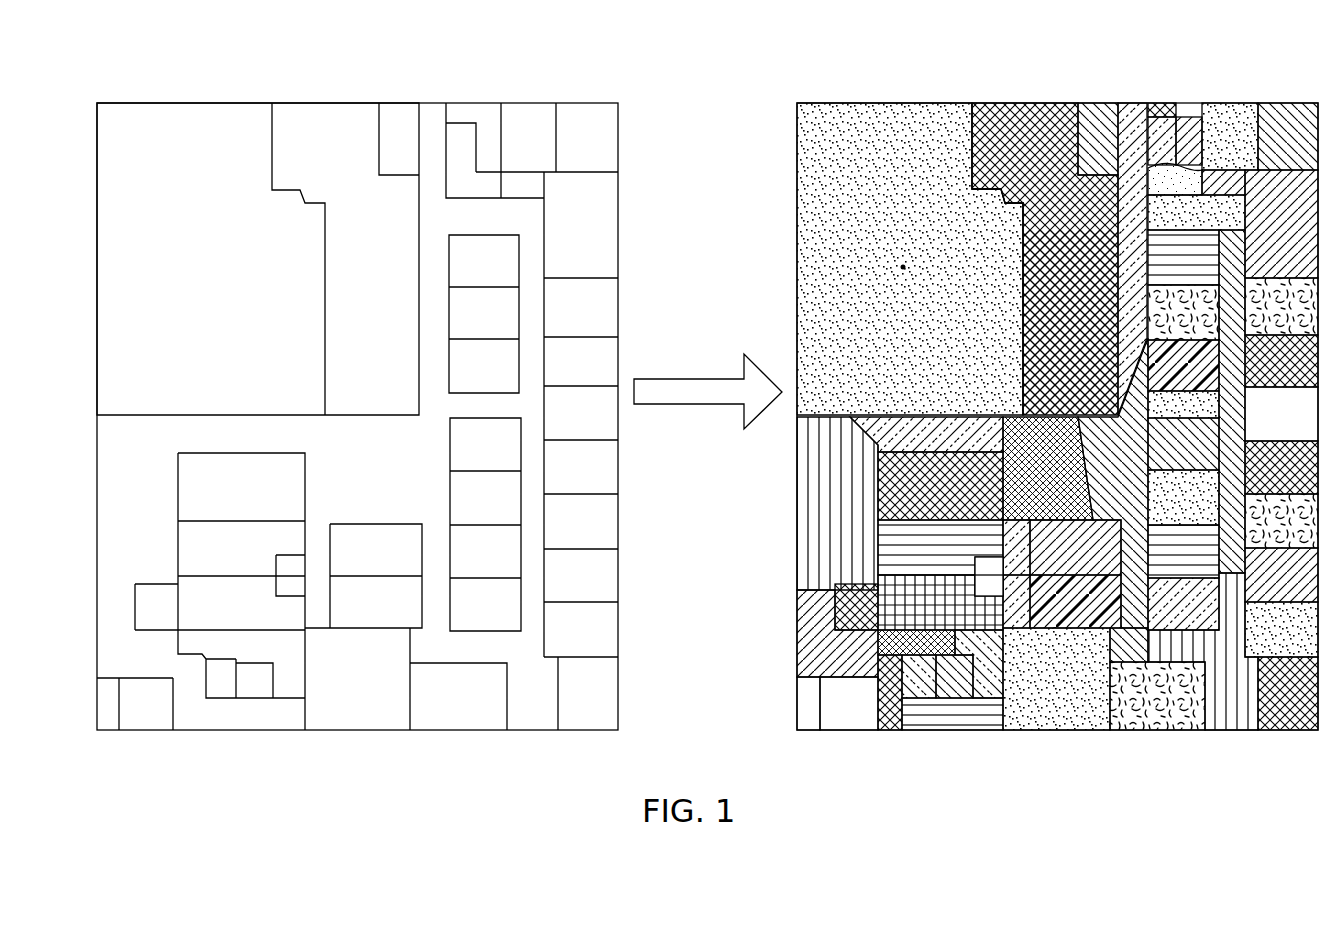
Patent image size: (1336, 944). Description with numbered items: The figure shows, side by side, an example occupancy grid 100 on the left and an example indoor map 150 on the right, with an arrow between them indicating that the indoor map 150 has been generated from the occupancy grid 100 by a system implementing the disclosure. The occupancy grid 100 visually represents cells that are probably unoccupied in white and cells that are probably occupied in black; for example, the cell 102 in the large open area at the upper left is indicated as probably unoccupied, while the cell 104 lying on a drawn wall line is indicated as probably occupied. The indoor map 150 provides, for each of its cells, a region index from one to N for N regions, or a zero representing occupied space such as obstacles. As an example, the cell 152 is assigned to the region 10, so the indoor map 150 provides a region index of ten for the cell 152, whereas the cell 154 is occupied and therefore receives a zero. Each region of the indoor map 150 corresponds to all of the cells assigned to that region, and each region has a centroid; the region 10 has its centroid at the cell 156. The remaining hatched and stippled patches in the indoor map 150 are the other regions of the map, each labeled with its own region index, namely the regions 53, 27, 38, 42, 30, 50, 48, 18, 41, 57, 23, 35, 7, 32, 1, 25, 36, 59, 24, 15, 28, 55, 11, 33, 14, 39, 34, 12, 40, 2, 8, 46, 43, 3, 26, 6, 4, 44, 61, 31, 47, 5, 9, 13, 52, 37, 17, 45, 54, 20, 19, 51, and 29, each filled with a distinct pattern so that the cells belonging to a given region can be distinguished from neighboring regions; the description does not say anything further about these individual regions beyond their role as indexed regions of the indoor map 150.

The occupancy grid 100 is at (357, 365).
The cell 102 is at (258, 237).
The cell 104 is at (302, 237).
The indoor map 150 is at (1036, 370).
The cell 152 is at (910, 237).
The cell 154 is at (999, 237).
The cell 156 is at (830, 240).
The region 10 is at (910, 259).
The class 53 region 53 is at (1045, 259).
The class 27 region 27 is at (1070, 322).
The class 38 region 38 is at (1098, 139).
The class 42 region 42 is at (1132, 259).
The class 30 region 30 is at (1183, 257).
The class 50 region 50 is at (1162, 141).
The class 48 region 48 is at (1189, 141).
The class 18 region 18 is at (1230, 136).
The class 41 region 41 is at (1288, 136).
The class 57 region 57 is at (1175, 179).
The class 23 region 23 is at (1223, 176).
The class 35 region 35 is at (1196, 212).
The class 7 region 7 is at (1183, 257).
The class 32 region 32 is at (1281, 224).
The class 1 region 1 is at (1008, 507).
The class 25 region 25 is at (1281, 306).
The class 36 region 36 is at (1183, 365).
The class 59 region 59 is at (1232, 401).
The class 24 region 24 is at (1281, 361).
The class 15 region 15 is at (1281, 414).
The class 28 region 28 is at (1113, 483).
The class 55 region 55 is at (1048, 468).
The class 11 region 11 is at (1183, 444).
The class 33 region 33 is at (1183, 497).
The class 14 region 14 is at (1183, 551).
The class 39 region 39 is at (1183, 604).
The class 34 region 34 is at (1281, 467).
The class 12 region 12 is at (1281, 521).
The class 40 region 40 is at (1281, 575).
The class 2 region 2 is at (1146, 602).
The class 8 region 8 is at (1288, 693).
The class 46 region 46 is at (1203, 651).
The class 43 region 43 is at (1129, 645).
The class 3 region 3 is at (1157, 696).
The class 26 region 26 is at (1056, 679).
The class 6 region 6 is at (1075, 547).
The class 4 region 4 is at (1075, 601).
The class 44 region 44 is at (1016, 547).
The class 61 region 61 is at (1016, 601).
The class 31 region 31 is at (837, 503).
The class 47 region 47 is at (926, 434).
The class 5 region 5 is at (940, 486).
The class 9 region 9 is at (940, 547).
The class 13 region 13 is at (940, 602).
The class 52 region 52 is at (856, 607).
The class 37 region 37 is at (837, 633).
The class 17 region 17 is at (849, 703).
The class 45 region 45 is at (916, 644).
The class 54 region 54 is at (890, 692).
The class 20 region 20 is at (919, 675).
The class 19 region 19 is at (955, 676).
The class 51 region 51 is at (979, 664).
The class 29 region 29 is at (952, 714).